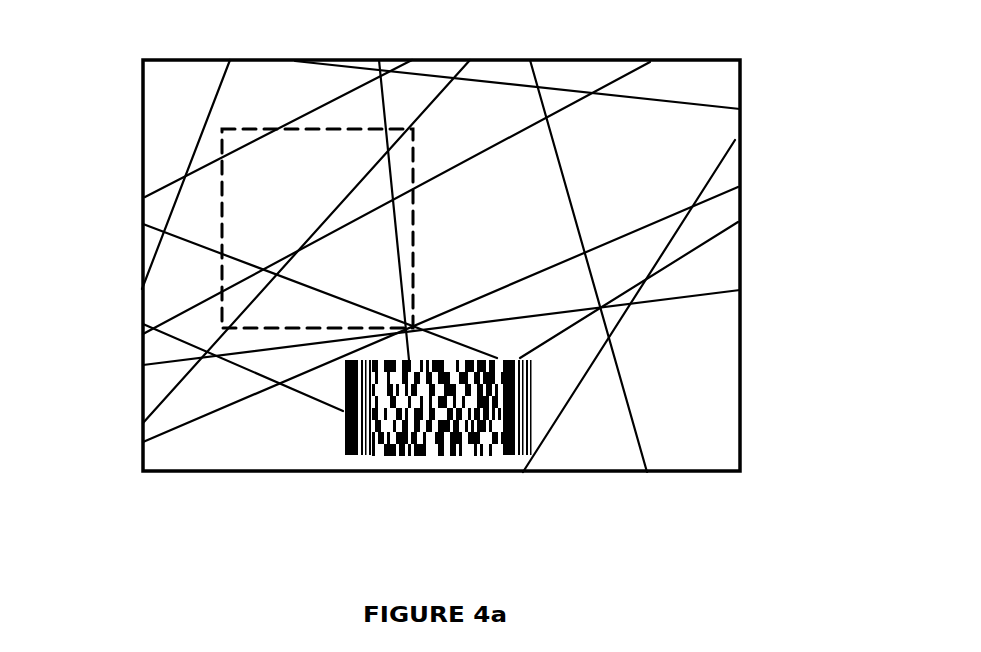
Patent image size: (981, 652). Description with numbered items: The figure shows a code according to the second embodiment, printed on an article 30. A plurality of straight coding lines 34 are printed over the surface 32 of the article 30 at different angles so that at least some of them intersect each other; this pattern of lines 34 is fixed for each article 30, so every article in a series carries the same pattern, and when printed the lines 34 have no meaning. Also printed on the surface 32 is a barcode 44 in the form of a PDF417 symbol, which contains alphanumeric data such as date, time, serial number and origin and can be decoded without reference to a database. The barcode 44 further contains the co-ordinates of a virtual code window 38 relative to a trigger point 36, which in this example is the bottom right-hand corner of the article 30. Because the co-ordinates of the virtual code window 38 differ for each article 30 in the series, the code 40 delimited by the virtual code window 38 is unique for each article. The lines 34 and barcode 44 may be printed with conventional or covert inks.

The article 30 is at (795, 308).
The surface 32 is at (687, 135).
The straight lines 34 is at (627, 307).
The trigger point 36 is at (740, 472).
The virtual code window 38 is at (143, 334).
The code 40 is at (300, 296).
The barcode 44 is at (437, 447).